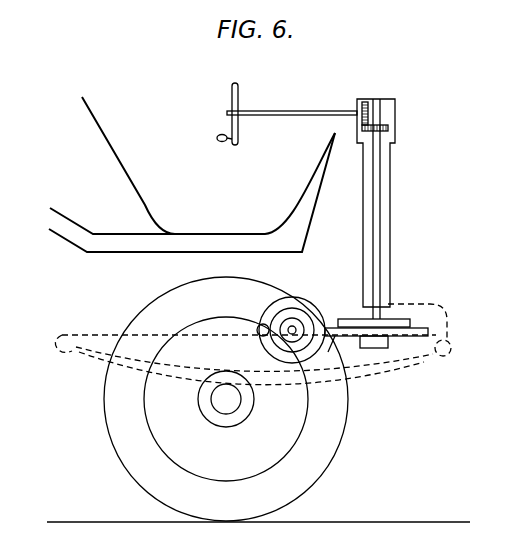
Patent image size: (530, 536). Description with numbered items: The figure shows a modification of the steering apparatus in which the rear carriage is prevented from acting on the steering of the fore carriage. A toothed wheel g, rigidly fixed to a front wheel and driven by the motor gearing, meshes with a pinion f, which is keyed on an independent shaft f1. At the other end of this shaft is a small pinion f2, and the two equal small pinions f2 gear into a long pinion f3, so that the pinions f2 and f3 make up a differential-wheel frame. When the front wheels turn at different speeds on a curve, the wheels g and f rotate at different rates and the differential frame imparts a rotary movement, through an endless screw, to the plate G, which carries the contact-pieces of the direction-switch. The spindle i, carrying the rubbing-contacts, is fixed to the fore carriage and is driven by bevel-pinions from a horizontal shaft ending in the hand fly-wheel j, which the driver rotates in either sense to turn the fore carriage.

The hand fly-wheel j is at (287, 111).
The spindle i is at (376, 218).
The pinion f is at (296, 326).
The shaft f1 is at (291, 326).
The small pinion f2 is at (312, 316).
The long pinion f3 is at (262, 325).
The plate G is at (411, 337).
The toothed wheel g is at (303, 438).